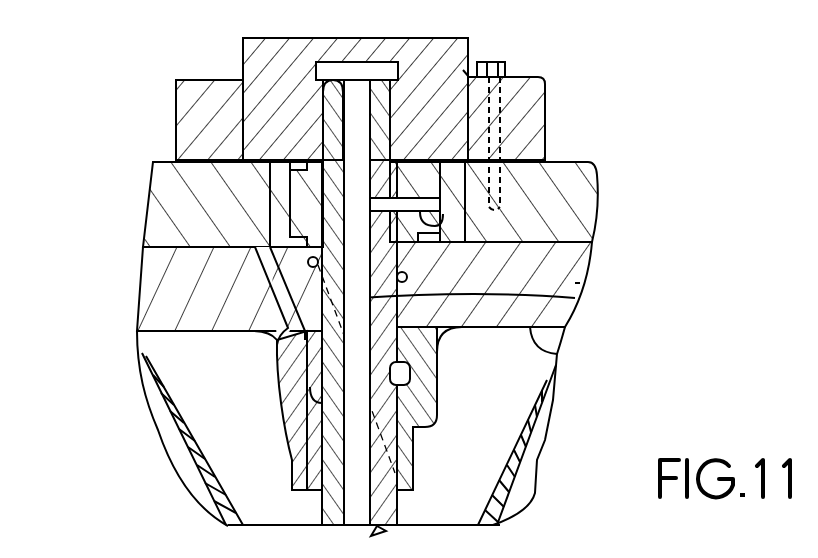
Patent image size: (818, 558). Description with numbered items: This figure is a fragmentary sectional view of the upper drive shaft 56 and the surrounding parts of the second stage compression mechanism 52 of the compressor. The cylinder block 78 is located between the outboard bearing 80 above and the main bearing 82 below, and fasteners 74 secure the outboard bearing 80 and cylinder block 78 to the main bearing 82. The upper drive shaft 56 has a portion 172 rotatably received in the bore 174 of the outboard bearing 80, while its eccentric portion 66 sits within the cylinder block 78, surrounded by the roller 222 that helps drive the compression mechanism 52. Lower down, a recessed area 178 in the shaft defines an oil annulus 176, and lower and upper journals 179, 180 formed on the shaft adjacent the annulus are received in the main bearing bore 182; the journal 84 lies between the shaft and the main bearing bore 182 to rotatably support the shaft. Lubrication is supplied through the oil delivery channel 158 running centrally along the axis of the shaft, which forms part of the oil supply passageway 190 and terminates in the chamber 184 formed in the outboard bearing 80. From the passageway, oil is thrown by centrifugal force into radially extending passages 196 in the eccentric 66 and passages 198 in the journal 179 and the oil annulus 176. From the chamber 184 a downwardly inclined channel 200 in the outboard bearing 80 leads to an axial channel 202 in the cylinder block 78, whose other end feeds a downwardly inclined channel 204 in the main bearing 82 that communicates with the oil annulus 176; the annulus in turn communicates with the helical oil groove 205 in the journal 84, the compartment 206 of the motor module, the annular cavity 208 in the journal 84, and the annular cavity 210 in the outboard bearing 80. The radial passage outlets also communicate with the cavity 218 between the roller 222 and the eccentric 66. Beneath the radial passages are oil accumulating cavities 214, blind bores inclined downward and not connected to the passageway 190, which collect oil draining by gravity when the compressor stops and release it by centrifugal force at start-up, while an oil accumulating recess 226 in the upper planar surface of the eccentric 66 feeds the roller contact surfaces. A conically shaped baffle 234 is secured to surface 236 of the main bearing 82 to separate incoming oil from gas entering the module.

The second stage compression mechanism 52 is at (617, 215).
The upper drive shaft 56 is at (323, 508).
The eccentric portion 66 is at (430, 157).
The fasteners 74 is at (505, 68).
The cylinder block 78 is at (595, 182).
The outboard bearing 80 is at (365, 37).
The main bearing 82 is at (553, 357).
The journal 84 is at (407, 440).
The oil delivery channel 158 is at (575, 298).
The portion of upper drive shaft 172 is at (330, 140).
The bore 174 is at (330, 140).
The oil annulus 176 is at (312, 367).
The recessed area 178 is at (323, 403).
The lower journal 179 is at (323, 425).
The upper journal 180 is at (200, 342).
The main bearing bore 182 is at (580, 283).
The chamber 184 is at (375, 65).
The oil supply passageway 190 is at (380, 534).
The radially extending passages 196 is at (290, 196).
The radially extending passage 198 is at (300, 262).
The downwardly inclined channel 200 is at (280, 127).
The axial channel 202 is at (270, 212).
The downwardly inclined channel 204 is at (230, 278).
The helical oil groove 205 is at (430, 340).
The compartment 206 is at (533, 460).
The annular cavity 208 is at (413, 255).
The annular cavity 210 is at (503, 62).
The oil accumulating cylindrical cavities 214 is at (440, 68).
The cavity 218 is at (473, 230).
The roller 222 is at (345, 203).
The oil accumulating recess 226 is at (303, 153).
The conically shaped baffle 234 is at (535, 427).
The surface 236 is at (560, 337).